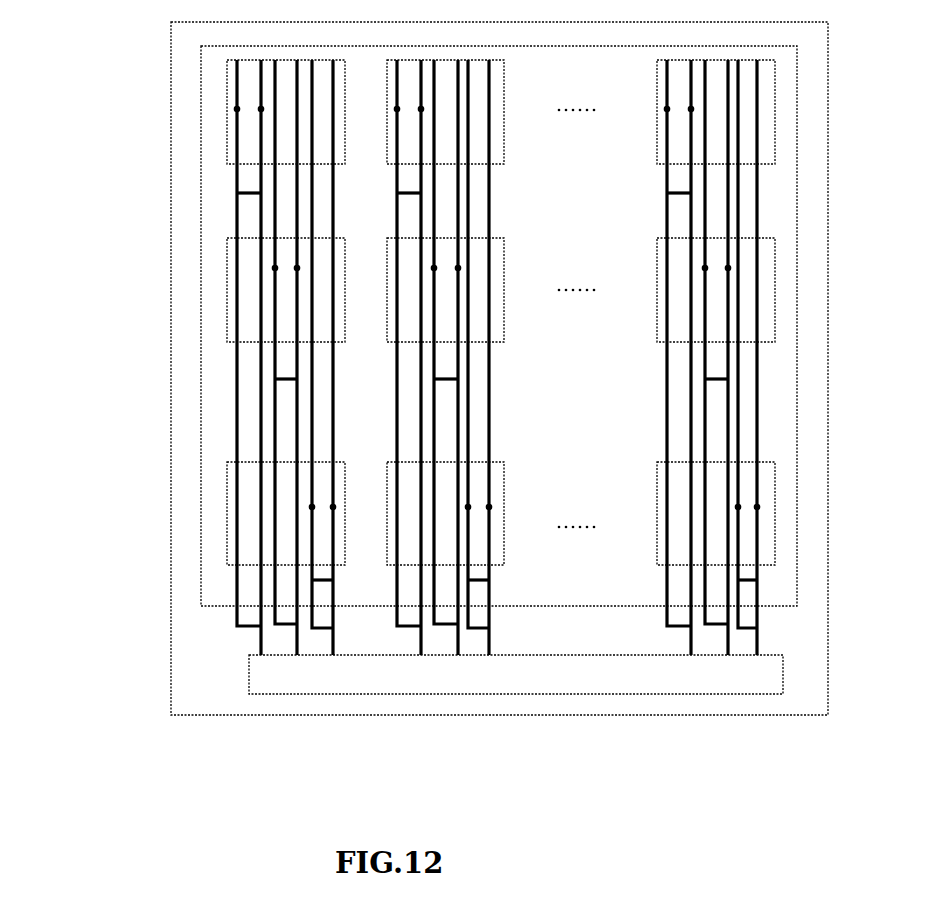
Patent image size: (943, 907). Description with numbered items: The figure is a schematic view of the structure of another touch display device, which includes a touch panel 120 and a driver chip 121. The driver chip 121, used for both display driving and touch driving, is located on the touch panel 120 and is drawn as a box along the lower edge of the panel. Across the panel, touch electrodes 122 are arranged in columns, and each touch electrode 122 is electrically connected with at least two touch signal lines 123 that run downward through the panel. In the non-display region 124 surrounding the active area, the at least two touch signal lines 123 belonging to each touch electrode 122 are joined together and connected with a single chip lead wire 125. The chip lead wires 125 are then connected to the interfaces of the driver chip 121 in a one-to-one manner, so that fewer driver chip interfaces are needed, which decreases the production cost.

The touch panel 120 is at (171, 69).
The driver chip 121 is at (249, 675).
The touch electrode 122 is at (235, 110).
The touch signal line 123 is at (260, 211).
The non-display region 124 is at (213, 653).
The chip lead wire 125 is at (258, 636).